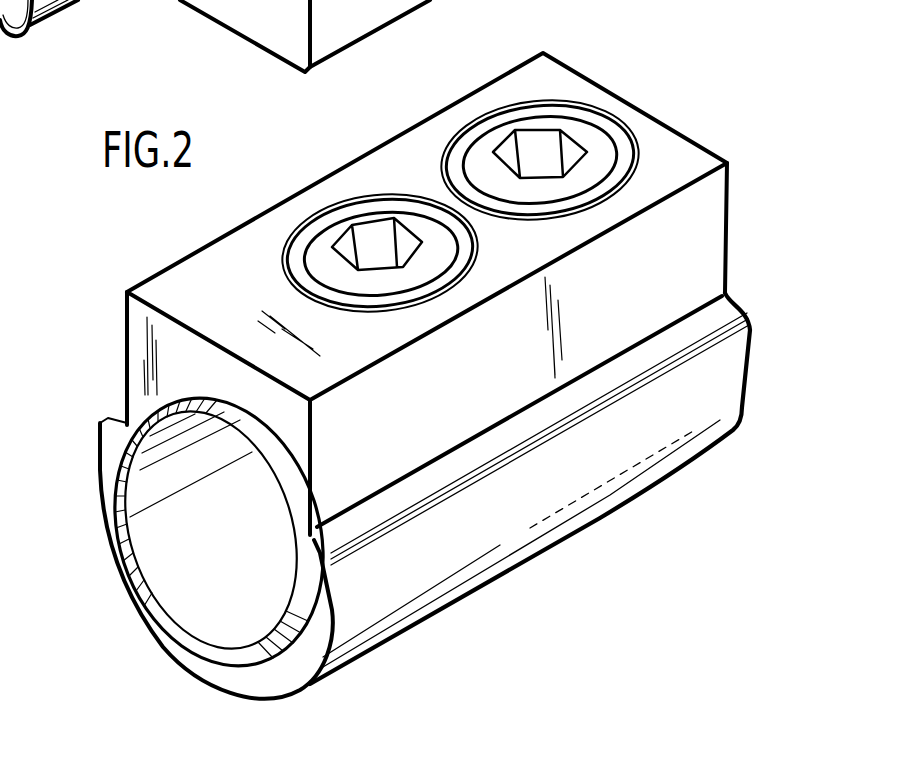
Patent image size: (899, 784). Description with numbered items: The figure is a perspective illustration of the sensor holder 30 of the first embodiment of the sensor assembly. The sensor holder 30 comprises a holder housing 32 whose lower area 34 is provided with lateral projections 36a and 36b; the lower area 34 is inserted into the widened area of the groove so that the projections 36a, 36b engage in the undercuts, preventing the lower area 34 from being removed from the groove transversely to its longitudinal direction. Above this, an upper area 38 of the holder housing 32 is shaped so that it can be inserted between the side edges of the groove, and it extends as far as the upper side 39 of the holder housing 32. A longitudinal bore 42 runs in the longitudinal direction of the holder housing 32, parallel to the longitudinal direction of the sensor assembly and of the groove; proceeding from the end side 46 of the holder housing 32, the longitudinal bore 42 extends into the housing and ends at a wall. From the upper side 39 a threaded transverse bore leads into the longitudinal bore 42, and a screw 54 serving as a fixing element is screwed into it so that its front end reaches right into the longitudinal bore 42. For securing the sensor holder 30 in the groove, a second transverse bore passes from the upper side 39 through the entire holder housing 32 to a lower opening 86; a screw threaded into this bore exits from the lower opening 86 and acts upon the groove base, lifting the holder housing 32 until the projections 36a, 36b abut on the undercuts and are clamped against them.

The sensor holder 30 is at (378, 180).
The holder housing 32 is at (673, 170).
The lower area 34 is at (705, 403).
The lateral projection 36a is at (106, 421).
The lateral projection 36b is at (447, 478).
The upper area 38 is at (682, 262).
The upper side 39 is at (582, 100).
The longitudinal bore 42 is at (175, 495).
The end side 46 is at (170, 628).
The screw 54 is at (320, 245).
The lower opening 86 is at (490, 142).